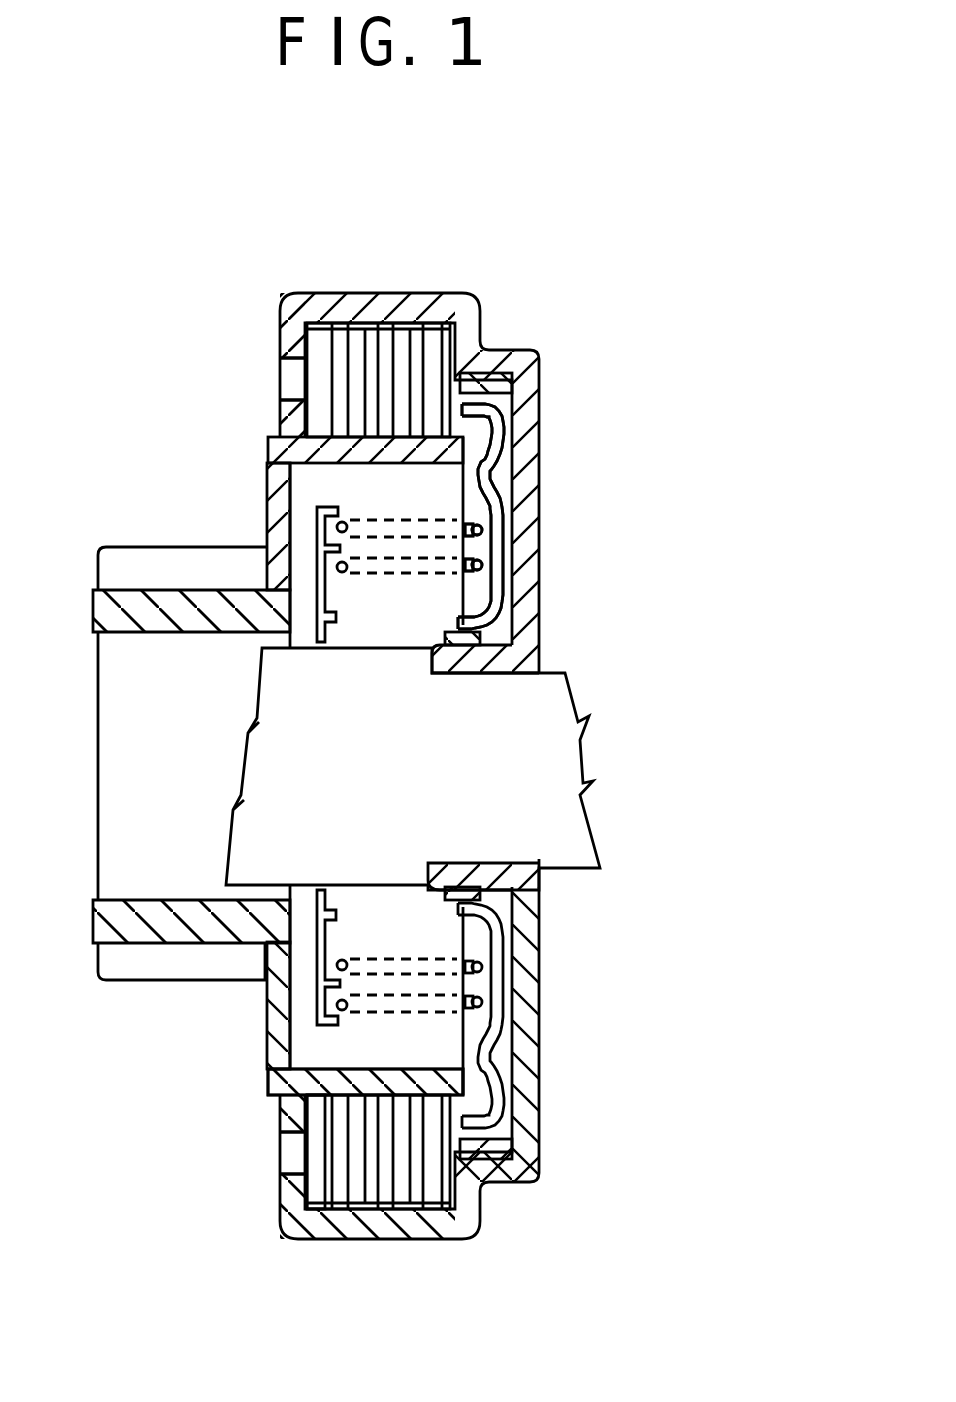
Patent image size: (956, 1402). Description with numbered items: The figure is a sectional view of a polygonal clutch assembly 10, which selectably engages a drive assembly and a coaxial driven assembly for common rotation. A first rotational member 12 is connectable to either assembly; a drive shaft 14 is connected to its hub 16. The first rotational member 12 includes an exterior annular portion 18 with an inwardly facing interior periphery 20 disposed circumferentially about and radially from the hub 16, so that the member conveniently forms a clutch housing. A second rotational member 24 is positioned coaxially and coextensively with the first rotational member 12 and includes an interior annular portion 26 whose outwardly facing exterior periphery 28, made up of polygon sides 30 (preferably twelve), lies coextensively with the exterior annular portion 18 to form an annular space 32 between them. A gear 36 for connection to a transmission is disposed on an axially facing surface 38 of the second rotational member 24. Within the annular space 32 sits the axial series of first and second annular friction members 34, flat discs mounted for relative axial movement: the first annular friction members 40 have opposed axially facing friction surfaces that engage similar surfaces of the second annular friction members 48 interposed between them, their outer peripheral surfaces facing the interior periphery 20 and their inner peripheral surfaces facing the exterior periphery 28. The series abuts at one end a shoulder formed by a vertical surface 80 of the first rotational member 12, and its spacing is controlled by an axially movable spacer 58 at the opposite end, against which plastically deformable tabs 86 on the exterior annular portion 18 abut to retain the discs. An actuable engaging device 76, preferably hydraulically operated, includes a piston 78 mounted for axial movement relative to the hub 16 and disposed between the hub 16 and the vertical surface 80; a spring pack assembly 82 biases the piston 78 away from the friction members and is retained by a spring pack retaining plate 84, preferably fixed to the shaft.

The polygonal clutch assembly 10 is at (535, 285).
The first rotational member 12 is at (535, 372).
The drive shaft 14 is at (548, 752).
The hub 16 is at (470, 655).
The exterior annular portion 18 is at (324, 303).
The interior periphery 20 is at (282, 1232).
The second rotational member 24 is at (278, 495).
The interior annular portion 26 is at (320, 450).
The exterior periphery 28 is at (477, 1192).
The polygon sides 30 is at (302, 1095).
The annular space 32 is at (387, 362).
The axial series of first and second annular friction members 34 is at (395, 1220).
The gear 36 is at (168, 560).
The axially facing surface 38 is at (265, 985).
The first annular friction members 40 is at (413, 373).
The second annular friction members 48 is at (336, 1182).
The spacer 58 is at (318, 340).
The actuable engaging device 76 is at (512, 467).
The piston 78 is at (495, 518).
The vertical surface 80 is at (500, 1182).
The spring pack assembly 82 is at (422, 962).
The spring pack retaining plate 84 is at (323, 1003).
The tabs 86 is at (288, 1197).